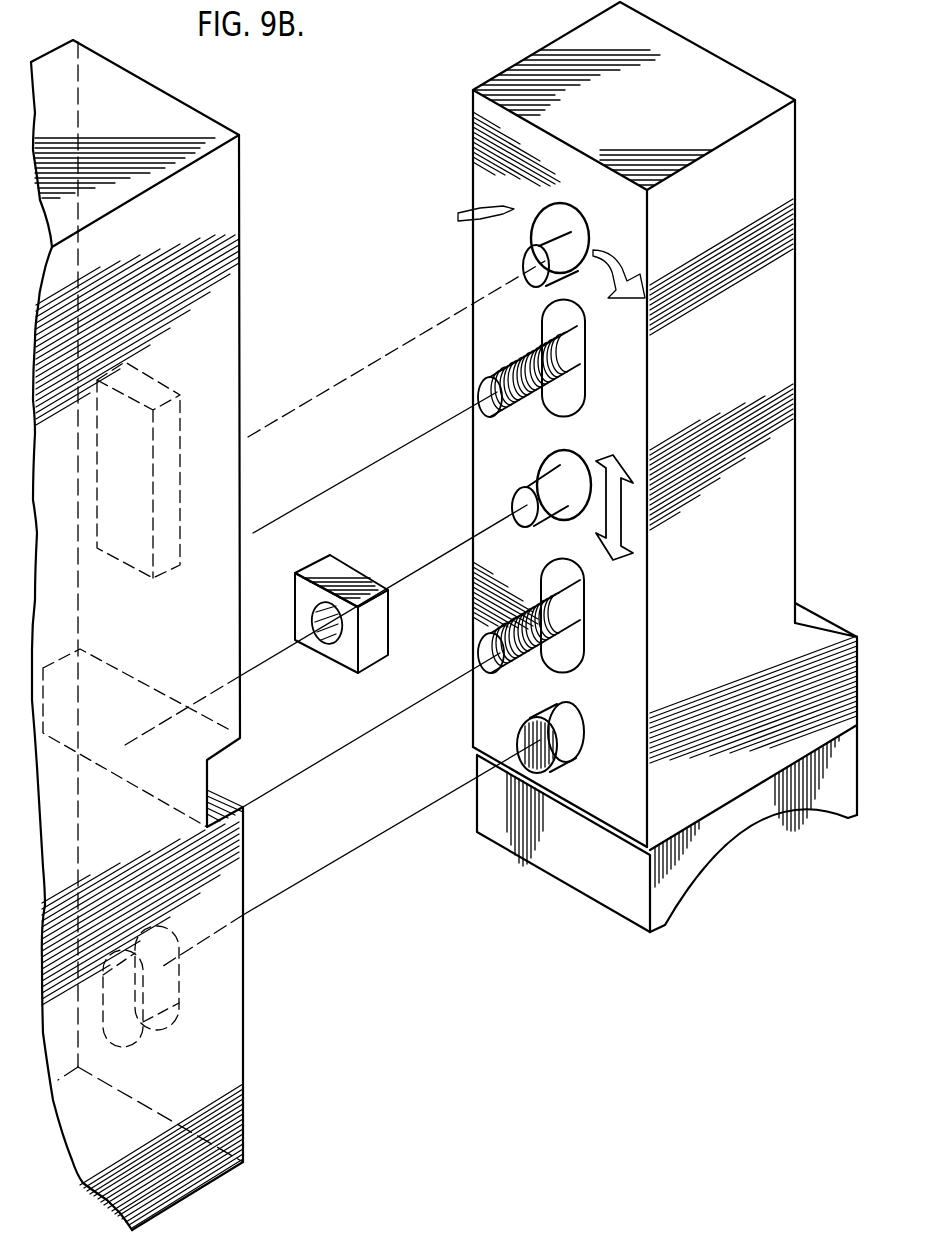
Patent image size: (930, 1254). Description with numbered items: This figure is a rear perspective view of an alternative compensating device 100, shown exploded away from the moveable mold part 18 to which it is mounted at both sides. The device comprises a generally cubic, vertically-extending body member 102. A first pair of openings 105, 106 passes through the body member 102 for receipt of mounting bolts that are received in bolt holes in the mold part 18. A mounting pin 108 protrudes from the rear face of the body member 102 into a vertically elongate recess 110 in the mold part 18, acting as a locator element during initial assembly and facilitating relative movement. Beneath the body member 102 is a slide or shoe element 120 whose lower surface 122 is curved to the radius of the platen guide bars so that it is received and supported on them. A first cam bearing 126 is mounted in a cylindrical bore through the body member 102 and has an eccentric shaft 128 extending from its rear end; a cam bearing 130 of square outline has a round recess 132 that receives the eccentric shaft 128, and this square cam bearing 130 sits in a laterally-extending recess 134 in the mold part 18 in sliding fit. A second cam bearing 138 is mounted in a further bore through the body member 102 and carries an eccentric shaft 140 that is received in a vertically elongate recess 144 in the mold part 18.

The moveable mold part 18 is at (185, 120).
The compensating device 100 is at (304, 128).
The body member 102 is at (753, 93).
The opening 105 is at (577, 383).
The opening 106 is at (572, 645).
The mounting pin 108 is at (552, 712).
The vertically elongate recess 110 is at (170, 978).
The slide element 120 is at (552, 847).
The lower surface of slide element 122 is at (713, 860).
The first cam bearing 126 is at (548, 468).
The eccentric shaft 128 is at (532, 522).
The cam bearing of square outline 130 is at (380, 640).
The round recess 132 is at (320, 648).
The laterally-extending recess 134 is at (233, 752).
The second cam bearing 138 is at (566, 222).
The eccentric shaft 140 is at (523, 246).
The vertically elongate recess 144 is at (180, 388).